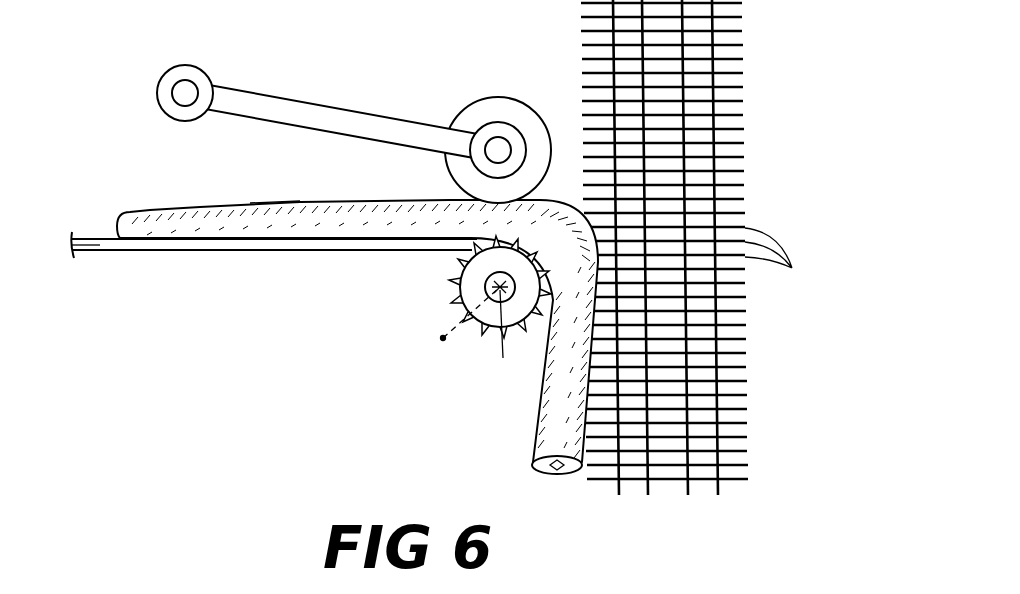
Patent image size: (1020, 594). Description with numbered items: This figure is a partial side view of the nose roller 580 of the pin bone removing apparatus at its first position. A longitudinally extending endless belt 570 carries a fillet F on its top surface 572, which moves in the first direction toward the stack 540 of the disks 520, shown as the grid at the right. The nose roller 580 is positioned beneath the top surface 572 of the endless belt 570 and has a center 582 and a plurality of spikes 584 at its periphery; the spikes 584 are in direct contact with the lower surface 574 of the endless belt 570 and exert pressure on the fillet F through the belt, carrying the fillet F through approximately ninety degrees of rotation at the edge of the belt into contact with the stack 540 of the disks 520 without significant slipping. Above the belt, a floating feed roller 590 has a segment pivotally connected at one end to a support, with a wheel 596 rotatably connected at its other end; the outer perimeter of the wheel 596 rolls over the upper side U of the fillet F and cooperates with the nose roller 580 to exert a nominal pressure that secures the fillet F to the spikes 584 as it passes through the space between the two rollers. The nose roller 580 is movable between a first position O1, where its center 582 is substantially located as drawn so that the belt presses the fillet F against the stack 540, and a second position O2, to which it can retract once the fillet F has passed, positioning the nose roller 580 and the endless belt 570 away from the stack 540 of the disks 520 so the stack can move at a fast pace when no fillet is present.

The disks 520 is at (795, 263).
The stack 540 is at (745, 113).
The endless belt 570 is at (61, 252).
The top surface 572 is at (108, 240).
The lower surface 574 is at (122, 252).
The nose roller 580 is at (524, 338).
The center 582 is at (497, 326).
The spikes 584 is at (503, 358).
The floating feed roller 590 is at (357, 98).
The wheel 596 is at (503, 100).
The fillet F is at (274, 199).
The upper side U is at (371, 200).
The first position O1 is at (500, 287).
The second position O2 is at (443, 338).